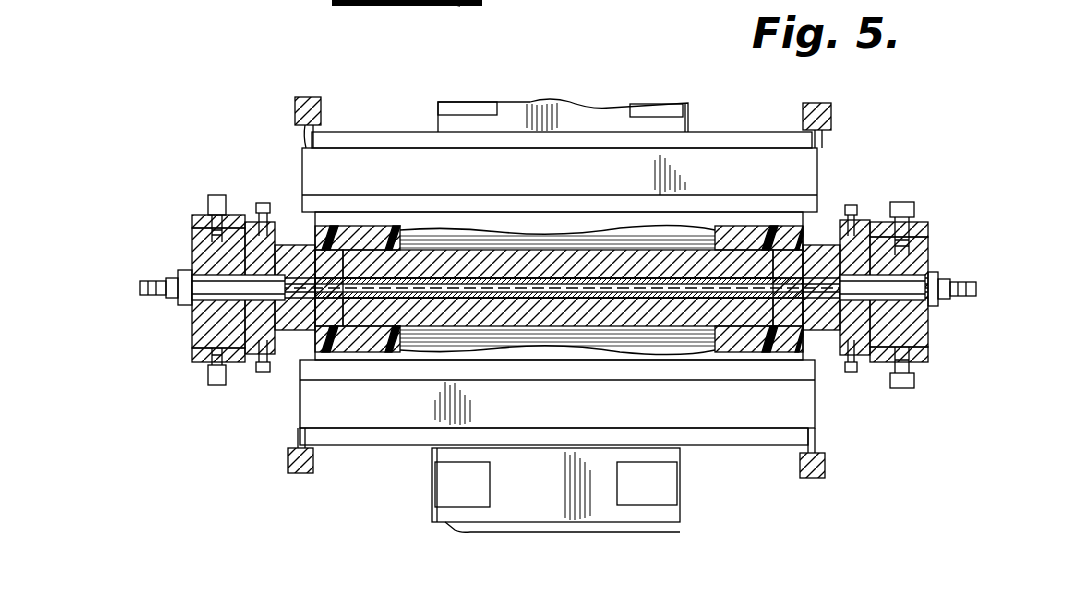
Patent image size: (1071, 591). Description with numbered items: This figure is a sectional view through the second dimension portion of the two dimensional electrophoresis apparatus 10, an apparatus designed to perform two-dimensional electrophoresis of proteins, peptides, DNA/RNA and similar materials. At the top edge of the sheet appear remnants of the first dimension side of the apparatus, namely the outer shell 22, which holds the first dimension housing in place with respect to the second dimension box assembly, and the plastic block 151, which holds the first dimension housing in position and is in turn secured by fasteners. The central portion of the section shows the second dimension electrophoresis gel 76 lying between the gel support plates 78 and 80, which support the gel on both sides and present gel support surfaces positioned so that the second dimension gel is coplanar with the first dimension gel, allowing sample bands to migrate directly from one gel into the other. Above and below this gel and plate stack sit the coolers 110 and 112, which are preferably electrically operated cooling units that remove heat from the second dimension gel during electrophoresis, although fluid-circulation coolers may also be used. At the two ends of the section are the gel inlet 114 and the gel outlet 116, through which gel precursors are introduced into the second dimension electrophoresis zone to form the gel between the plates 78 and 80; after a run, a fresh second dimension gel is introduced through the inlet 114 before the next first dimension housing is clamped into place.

The two dimensional electrophoresis apparatus 10 is at (270, 150).
The outer shell 22 is at (360, 6).
The second dimension electrophoresis gel 76 is at (431, 300).
The gel support plate 78 is at (434, 272).
The gel support plate 80 is at (632, 292).
The cooler 110 is at (608, 118).
The cooler 112 is at (630, 532).
The gel inlet 114 is at (970, 292).
The gel outlet 116 is at (152, 290).
The plastic block 151 is at (438, 3).